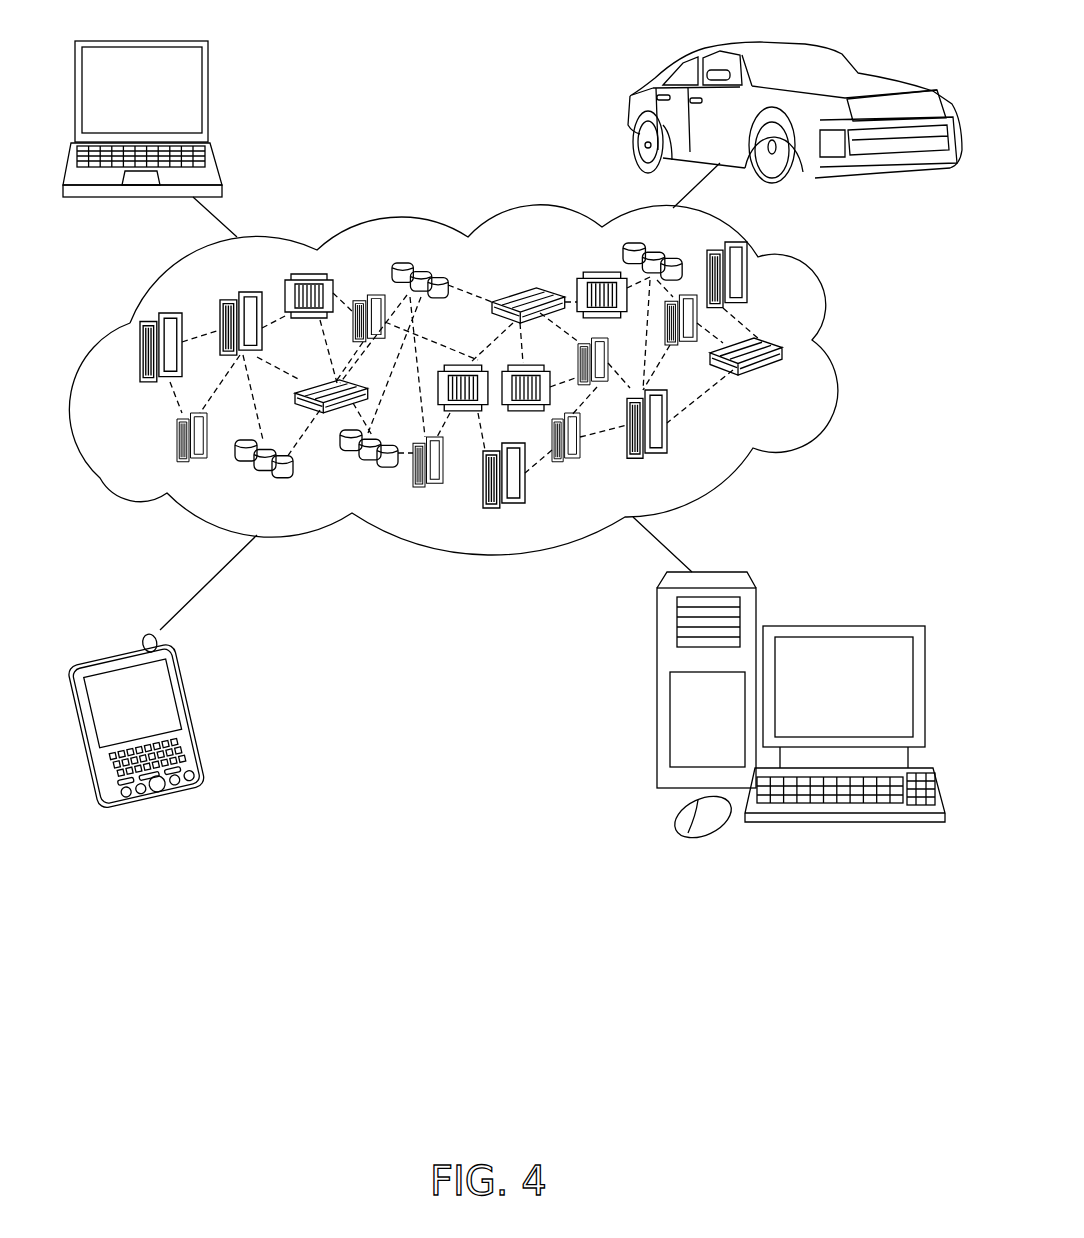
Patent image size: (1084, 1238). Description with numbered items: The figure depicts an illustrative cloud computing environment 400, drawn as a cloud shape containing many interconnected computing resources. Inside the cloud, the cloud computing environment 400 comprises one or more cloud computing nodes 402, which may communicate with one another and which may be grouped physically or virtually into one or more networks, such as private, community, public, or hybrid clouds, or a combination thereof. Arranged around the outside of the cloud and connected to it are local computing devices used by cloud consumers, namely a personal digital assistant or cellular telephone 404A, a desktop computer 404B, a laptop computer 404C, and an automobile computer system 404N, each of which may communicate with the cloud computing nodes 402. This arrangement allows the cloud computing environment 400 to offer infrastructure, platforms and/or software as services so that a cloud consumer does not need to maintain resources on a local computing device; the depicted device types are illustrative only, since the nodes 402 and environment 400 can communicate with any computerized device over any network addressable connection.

The cloud computing environment 400 is at (792, 350).
The cloud computing nodes 402 is at (783, 383).
The personal digital assistant or cellular telephone 404A is at (185, 683).
The desktop computer 404B is at (830, 626).
The laptop computer 404C is at (208, 73).
The automobile computer system 404N is at (630, 118).